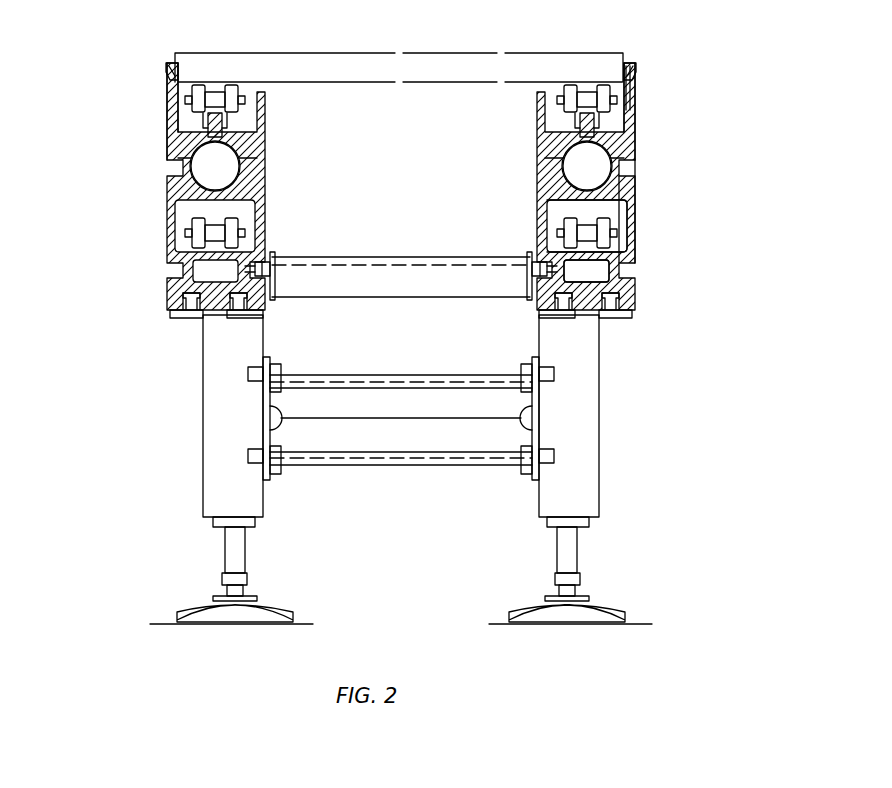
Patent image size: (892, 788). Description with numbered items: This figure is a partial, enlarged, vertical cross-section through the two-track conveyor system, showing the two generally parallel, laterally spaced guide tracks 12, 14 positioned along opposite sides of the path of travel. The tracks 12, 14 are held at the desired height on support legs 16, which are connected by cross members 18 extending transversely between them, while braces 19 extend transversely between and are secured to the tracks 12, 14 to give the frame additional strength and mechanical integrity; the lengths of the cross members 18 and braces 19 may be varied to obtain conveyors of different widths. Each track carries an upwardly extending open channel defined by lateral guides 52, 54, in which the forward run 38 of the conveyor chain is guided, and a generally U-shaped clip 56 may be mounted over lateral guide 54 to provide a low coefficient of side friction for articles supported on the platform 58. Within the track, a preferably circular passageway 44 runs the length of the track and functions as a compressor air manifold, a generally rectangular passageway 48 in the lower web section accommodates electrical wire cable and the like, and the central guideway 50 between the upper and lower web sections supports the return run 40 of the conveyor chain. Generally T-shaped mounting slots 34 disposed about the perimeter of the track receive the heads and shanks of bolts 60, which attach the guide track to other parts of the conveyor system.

The guide track 12 is at (112, 186).
The guide track 14 is at (712, 118).
The support legs 16 is at (204, 438).
The cross members 18 is at (396, 465).
The braces 19 is at (408, 298).
The mounting slots 34 is at (632, 172).
The forward run 38 is at (625, 100).
The return run 40 is at (632, 240).
The passageway 44 is at (622, 140).
The passageway 48 is at (622, 292).
The central guideway 50 is at (617, 220).
The lateral guide 52 is at (274, 118).
The lateral guide 54 is at (165, 118).
The U-shaped clip 56 is at (170, 66).
The platform 58 is at (548, 53).
The bolts 60 is at (275, 268).